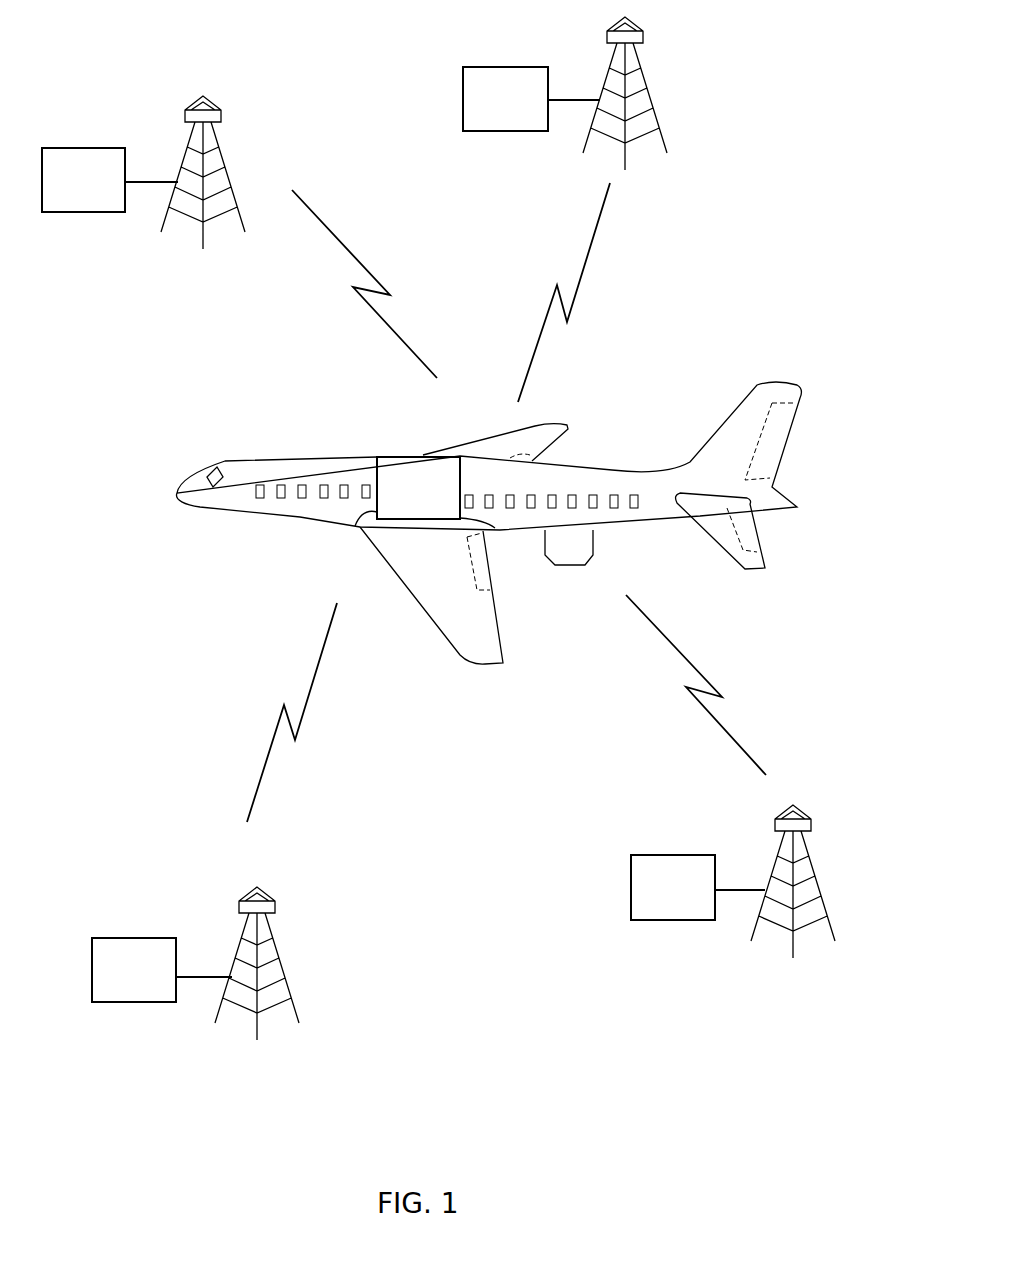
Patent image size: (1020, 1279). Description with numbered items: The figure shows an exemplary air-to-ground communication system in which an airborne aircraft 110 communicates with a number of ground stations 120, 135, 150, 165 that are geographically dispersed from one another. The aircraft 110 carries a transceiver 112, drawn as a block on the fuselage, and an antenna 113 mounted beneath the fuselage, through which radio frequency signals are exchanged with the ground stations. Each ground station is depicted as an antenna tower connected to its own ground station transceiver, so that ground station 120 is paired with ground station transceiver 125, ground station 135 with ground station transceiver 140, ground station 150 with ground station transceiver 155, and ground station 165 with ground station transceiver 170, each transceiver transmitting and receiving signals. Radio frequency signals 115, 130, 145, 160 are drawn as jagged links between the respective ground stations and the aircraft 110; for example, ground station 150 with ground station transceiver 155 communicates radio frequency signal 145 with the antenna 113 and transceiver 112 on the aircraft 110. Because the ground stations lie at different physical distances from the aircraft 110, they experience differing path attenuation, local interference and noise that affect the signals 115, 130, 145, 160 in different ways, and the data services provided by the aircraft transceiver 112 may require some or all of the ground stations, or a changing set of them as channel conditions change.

The aircraft 110 is at (230, 463).
The transceiver 112 is at (373, 510).
The antenna 113 is at (596, 548).
The RF signal 115 is at (324, 238).
The ground station 120 is at (225, 165).
The ground station transceiver 125 is at (65, 146).
The RF signal 130 is at (590, 259).
The ground station 135 is at (647, 87).
The ground station transceiver 140 is at (487, 66).
The radio frequency signal 145 is at (263, 752).
The ground station 150 is at (277, 948).
The ground station transceiver 155 is at (110, 937).
The RF signal 160 is at (740, 737).
The ground station 165 is at (815, 872).
The ground station transceiver 170 is at (655, 854).